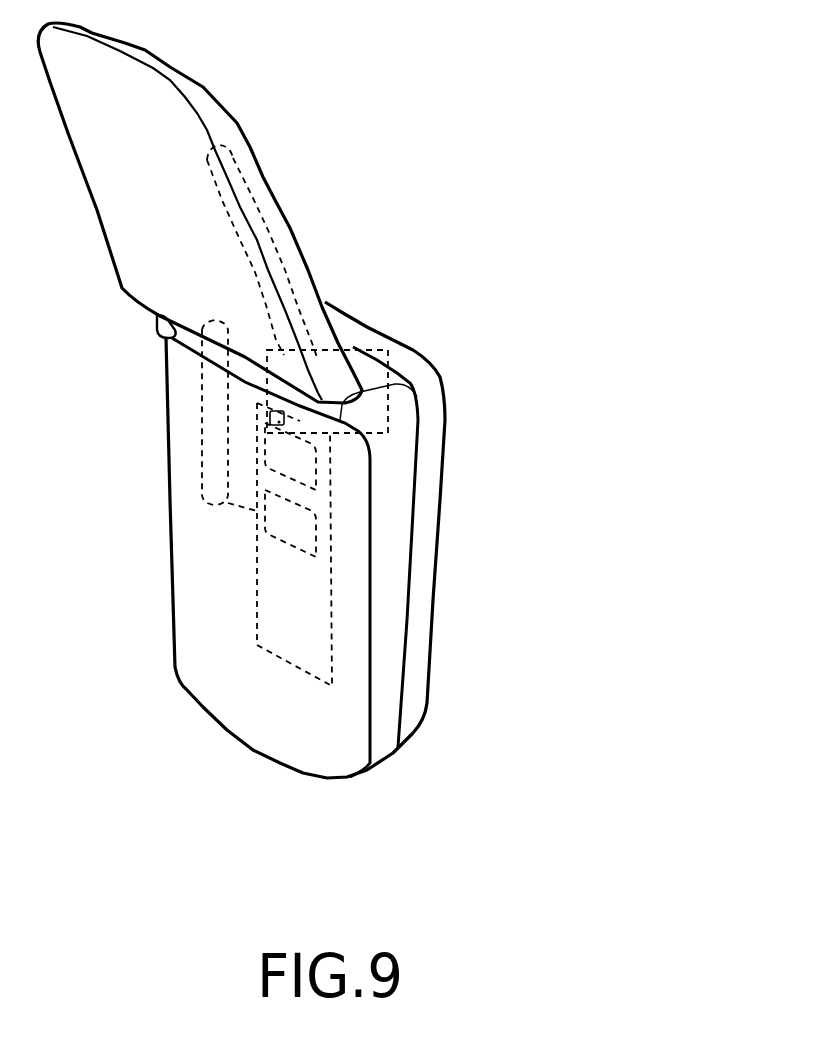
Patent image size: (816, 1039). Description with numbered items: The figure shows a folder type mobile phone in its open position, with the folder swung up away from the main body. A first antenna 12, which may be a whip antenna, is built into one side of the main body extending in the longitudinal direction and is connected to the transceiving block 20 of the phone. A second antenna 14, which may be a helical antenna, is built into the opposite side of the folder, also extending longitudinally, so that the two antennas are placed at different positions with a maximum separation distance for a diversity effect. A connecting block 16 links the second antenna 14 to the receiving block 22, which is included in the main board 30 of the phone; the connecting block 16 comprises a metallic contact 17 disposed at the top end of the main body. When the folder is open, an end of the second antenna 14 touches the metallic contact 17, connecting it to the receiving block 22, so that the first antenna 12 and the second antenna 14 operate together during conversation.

The first antenna 12 is at (202, 411).
The second antenna 14 is at (264, 226).
The connecting block 16 is at (352, 347).
The metallic contact 17 is at (290, 373).
The transceiving block 20 is at (298, 535).
The receiving block 22 is at (298, 468).
The main board 30 is at (332, 561).